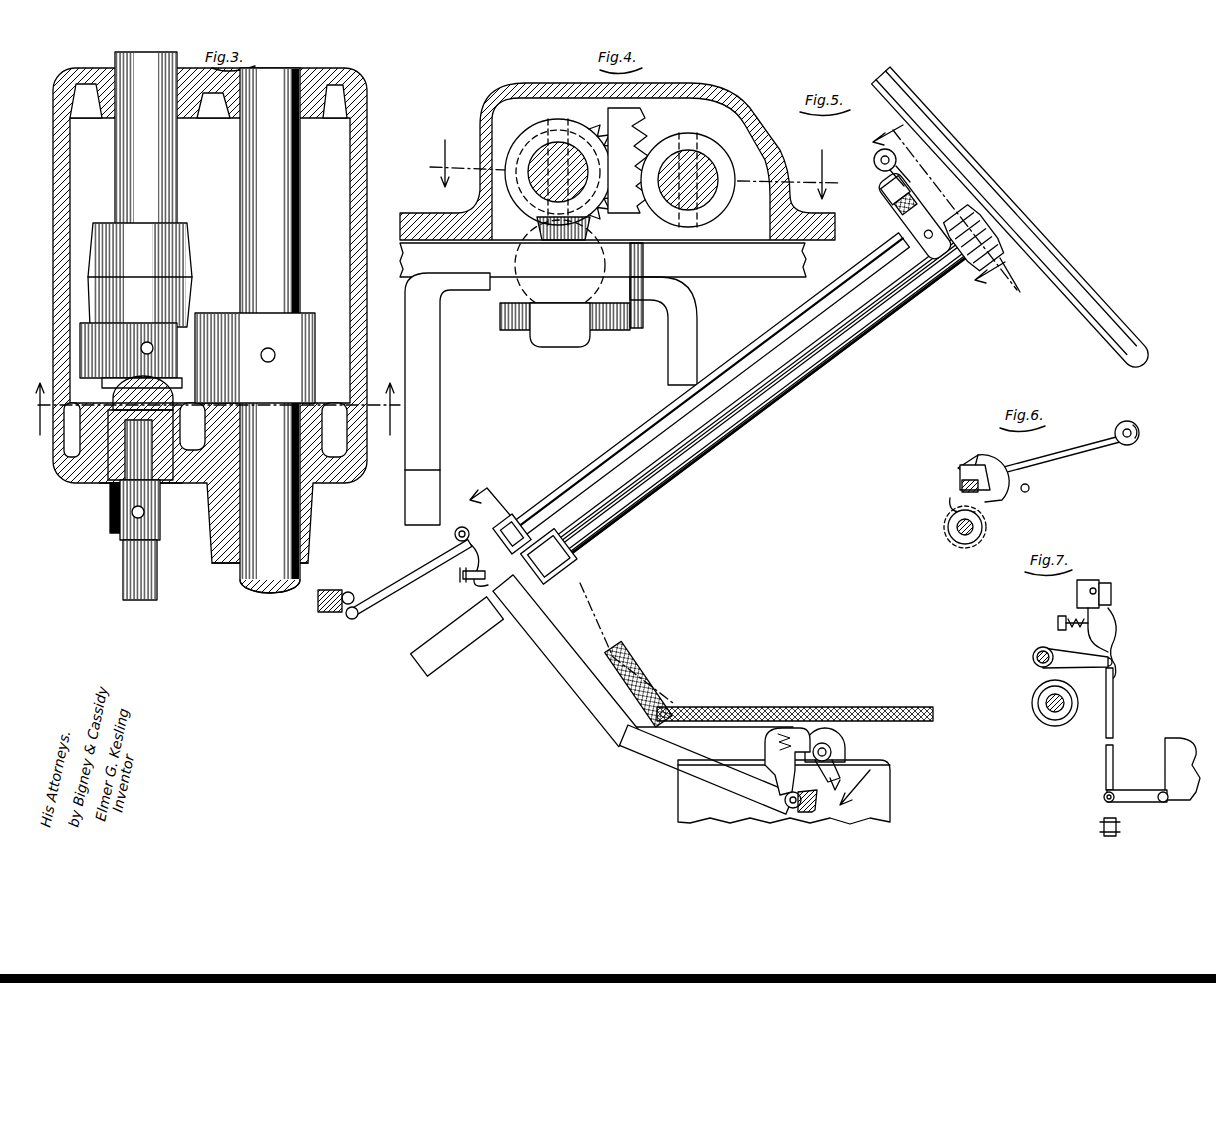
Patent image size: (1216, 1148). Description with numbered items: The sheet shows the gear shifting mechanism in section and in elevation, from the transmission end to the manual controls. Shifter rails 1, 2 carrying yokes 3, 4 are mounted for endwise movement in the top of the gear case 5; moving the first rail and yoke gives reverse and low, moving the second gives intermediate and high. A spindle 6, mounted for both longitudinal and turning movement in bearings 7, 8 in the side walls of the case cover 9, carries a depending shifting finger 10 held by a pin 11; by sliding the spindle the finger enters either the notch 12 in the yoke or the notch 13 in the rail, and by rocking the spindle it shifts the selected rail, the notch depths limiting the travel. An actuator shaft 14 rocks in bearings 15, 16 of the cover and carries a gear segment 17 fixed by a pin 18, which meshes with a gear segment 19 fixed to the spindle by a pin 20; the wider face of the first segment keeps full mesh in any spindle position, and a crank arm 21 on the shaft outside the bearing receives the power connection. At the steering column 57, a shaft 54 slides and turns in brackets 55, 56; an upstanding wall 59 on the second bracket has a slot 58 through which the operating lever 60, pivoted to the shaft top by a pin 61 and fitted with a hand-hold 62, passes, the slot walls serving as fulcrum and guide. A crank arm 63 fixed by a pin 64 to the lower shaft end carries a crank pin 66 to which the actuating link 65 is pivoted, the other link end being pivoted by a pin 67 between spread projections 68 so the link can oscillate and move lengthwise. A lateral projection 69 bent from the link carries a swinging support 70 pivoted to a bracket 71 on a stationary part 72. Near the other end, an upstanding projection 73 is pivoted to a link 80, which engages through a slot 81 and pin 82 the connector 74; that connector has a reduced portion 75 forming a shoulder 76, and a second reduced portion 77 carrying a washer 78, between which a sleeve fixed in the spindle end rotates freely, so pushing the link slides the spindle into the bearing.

In FIG. 4, the shifter rail 1 is at (748, 266).
In FIG. 4, the shifter rail 2 is at (420, 270).
In FIG. 4, the yoke 3 is at (694, 340).
In FIG. 3, the yoke 4 is at (217, 415).
In FIG. 5, the gear case 5 is at (880, 788).
In FIG. 3, the spindle 6 is at (180, 165).
In FIG. 4, the spindle 6 is at (540, 207).
In FIG. 5, the spindle 6 is at (946, 199).
In FIG. 3, the bearing 7 is at (100, 418).
In FIG. 4, the bearing 7 is at (440, 358).
In FIG. 5, the bearing 7 is at (670, 640).
In FIG. 3, the bearing 8 is at (98, 112).
In FIG. 3, the case cover 9 is at (352, 132).
In FIG. 4, the case cover 9 is at (515, 100).
In FIG. 5, the case cover 9 is at (838, 742).
In FIG. 7, the case cover 9 is at (1168, 752).
In FIG. 3, the shifting finger 10 is at (185, 243).
In FIG. 4, the shifting finger 10 is at (567, 342).
In FIG. 3, the pin 11 is at (192, 277).
In FIG. 3, the notch 12 is at (200, 318).
In FIG. 4, the notch 12 is at (520, 325).
In FIG. 4, the notch 13 is at (515, 255).
In FIG. 4, the actuator shaft 14 is at (718, 172).
In FIG. 5, the actuator shaft 14 is at (820, 765).
In FIG. 7, the actuator shaft 14 is at (1178, 790).
In FIG. 3, the bearing 15 is at (305, 510).
In FIG. 5, the bearing 15 is at (835, 752).
In FIG. 3, the bearing 16 is at (325, 118).
In FIG. 3, the gear segment 17 is at (306, 207).
In FIG. 4, the gear segment 17 is at (645, 135).
In FIG. 4, the pin 18 is at (695, 133).
In FIG. 3, the gear segment 19 is at (102, 385).
In FIG. 4, the gear segment 19 is at (605, 136).
In FIG. 3, the pin 20 is at (141, 346).
In FIG. 4, the pin 20 is at (562, 108).
In FIG. 5, the crank arm 21 is at (837, 789).
In FIG. 5, the shaft 54 is at (622, 442).
In FIG. 6, the shaft 54 is at (962, 485).
In FIG. 7, the shaft 54 is at (1038, 667).
In FIG. 5, the bracket 55 is at (535, 528).
In FIG. 7, the bracket 55 is at (1035, 690).
In FIG. 5, the bracket 56 is at (895, 222).
In FIG. 6, the bracket 56 is at (958, 505).
In FIG. 5, the steering column 57 is at (705, 455).
In FIG. 6, the steering column 57 is at (963, 545).
In FIG. 7, the steering column 57 is at (1048, 726).
In FIG. 5, the slot 58 is at (960, 222).
In FIG. 6, the slot 58 is at (1029, 487).
In FIG. 5, the upstanding wall 59 is at (920, 187).
In FIG. 6, the upstanding wall 59 is at (990, 452).
In FIG. 5, the operating lever 60 is at (896, 178).
In FIG. 6, the operating lever 60 is at (1075, 455).
In FIG. 5, the pin 61 is at (925, 198).
In FIG. 6, the pin 61 is at (965, 470).
In FIG. 5, the hand-hold 62 is at (873, 157).
In FIG. 6, the hand-hold 62 is at (1128, 445).
In FIG. 5, the crank arm 63 is at (488, 540).
In FIG. 7, the crank arm 63 is at (1085, 670).
In FIG. 5, the pin 64 is at (512, 540).
In FIG. 7, the pin 64 is at (1033, 658).
In FIG. 5, the actuating link 65 is at (598, 722).
In FIG. 7, the actuating link 65 is at (1113, 705).
In FIG. 5, the crank pin 66 is at (463, 578).
In FIG. 7, the crank pin 66 is at (1115, 662).
In FIG. 5, the pin 67 is at (789, 806).
In FIG. 5, the projections 68 is at (808, 812).
In FIG. 5, the lateral projection 69 is at (455, 535).
In FIG. 7, the lateral projection 69 is at (1092, 630).
In FIG. 5, the swinging support 70 is at (405, 585).
In FIG. 7, the swinging support 70 is at (1068, 630).
In FIG. 5, the bracket 71 is at (348, 592).
In FIG. 7, the bracket 71 is at (1094, 588).
In FIG. 5, the stationary part 72 is at (335, 612).
In FIG. 7, the stationary part 72 is at (1082, 582).
In FIG. 5, the upstanding projection 73 is at (766, 758).
In FIG. 7, the upstanding projection 73 is at (1103, 795).
In FIG. 3, the connector 74 is at (150, 535).
In FIG. 3, the reduced portion 75 is at (105, 483).
In FIG. 3, the shoulder 76 is at (152, 500).
In FIG. 3, the second reduced portion 77 is at (108, 440).
In FIG. 3, the washer 78 is at (160, 410).
In FIG. 3, the link 80 is at (135, 572).
In FIG. 5, the link 80 is at (768, 745).
In FIG. 7, the link 80 is at (1140, 802).
In FIG. 3, the slot 81 is at (110, 500).
In FIG. 7, the slot 81 is at (1110, 827).
In FIG. 3, the pin 82 is at (142, 515).
In FIG. 7, the pin 82 is at (1165, 802).